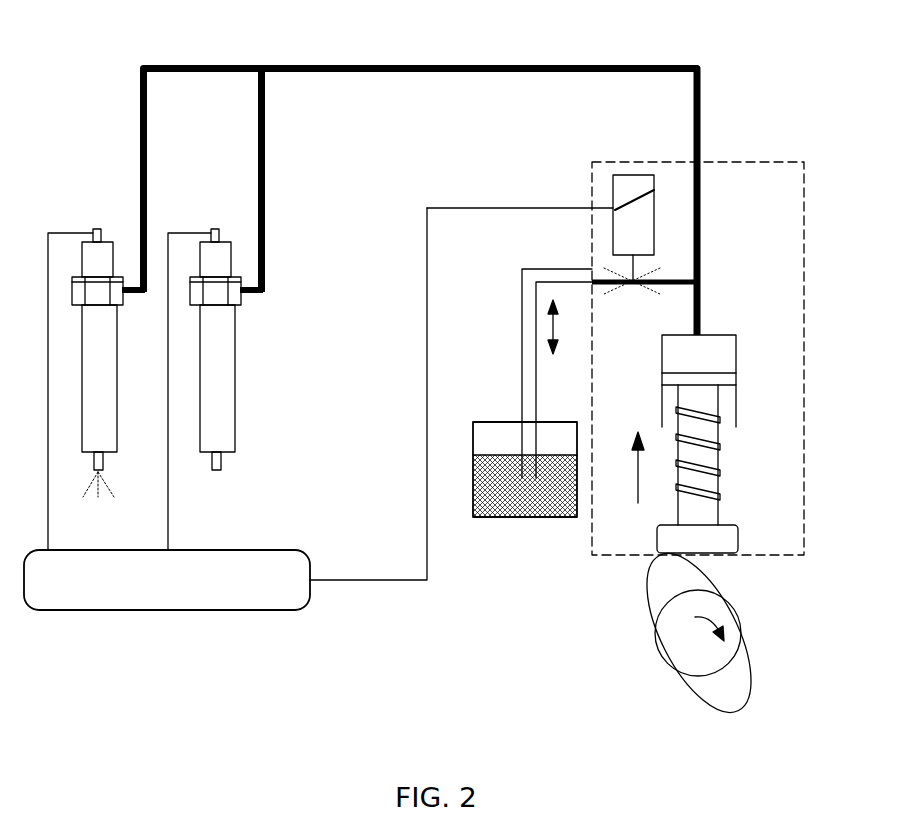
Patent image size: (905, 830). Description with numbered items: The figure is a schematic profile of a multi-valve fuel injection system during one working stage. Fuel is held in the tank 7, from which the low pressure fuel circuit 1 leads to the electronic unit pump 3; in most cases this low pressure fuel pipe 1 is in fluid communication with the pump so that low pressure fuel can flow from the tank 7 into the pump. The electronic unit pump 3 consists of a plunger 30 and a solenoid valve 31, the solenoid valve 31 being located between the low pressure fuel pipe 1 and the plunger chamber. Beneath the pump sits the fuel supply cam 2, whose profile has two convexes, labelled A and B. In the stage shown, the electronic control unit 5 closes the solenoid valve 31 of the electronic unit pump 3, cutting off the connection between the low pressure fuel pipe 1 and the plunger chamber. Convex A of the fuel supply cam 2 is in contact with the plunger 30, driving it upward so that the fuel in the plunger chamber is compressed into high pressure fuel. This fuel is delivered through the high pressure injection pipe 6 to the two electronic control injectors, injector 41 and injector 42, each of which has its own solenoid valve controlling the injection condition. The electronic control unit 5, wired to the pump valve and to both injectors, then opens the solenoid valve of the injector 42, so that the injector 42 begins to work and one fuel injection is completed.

The low pressure fuel circuit 1 is at (520, 352).
The fuel supply cam 2 is at (740, 618).
The electronic unit pump 3 is at (804, 258).
The electronic control unit 5 is at (300, 550).
The high pressure injection pipe 6 is at (405, 65).
The tank 7 is at (510, 517).
The plunger 30 is at (722, 479).
The solenoid valve 31 is at (650, 282).
The injector 41 is at (235, 385).
The injector 42 is at (118, 385).